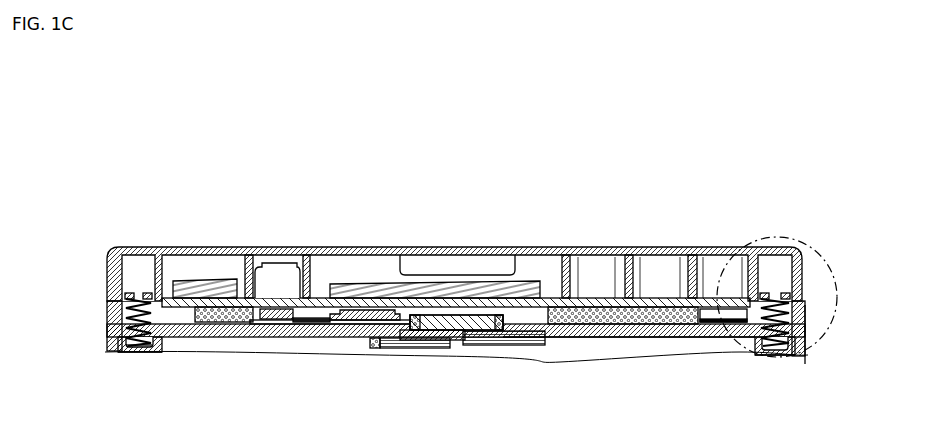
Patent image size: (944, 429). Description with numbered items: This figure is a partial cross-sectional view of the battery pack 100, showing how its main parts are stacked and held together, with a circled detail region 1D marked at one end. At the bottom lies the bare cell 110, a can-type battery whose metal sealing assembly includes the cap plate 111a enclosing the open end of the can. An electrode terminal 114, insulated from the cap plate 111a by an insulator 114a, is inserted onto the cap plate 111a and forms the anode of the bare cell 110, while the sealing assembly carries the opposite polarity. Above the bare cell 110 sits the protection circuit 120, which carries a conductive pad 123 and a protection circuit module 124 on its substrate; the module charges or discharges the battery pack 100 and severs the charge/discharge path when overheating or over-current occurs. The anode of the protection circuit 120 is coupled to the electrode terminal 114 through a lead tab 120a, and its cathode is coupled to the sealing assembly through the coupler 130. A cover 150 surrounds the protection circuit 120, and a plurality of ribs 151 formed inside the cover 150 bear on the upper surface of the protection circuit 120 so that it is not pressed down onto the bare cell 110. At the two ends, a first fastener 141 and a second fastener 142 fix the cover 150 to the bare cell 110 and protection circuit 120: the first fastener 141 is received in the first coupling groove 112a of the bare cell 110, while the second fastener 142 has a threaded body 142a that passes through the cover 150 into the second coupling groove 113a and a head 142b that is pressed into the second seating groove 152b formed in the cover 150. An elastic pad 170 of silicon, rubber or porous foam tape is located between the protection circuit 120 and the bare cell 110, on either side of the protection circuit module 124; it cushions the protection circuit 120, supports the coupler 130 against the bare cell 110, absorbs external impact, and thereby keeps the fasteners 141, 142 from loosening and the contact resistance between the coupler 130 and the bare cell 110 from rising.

The battery pack 100 is at (88, 139).
The bare cell 110 is at (99, 350).
The cap plate 111a is at (593, 338).
The first coupling groove 112a is at (775, 351).
The second coupling groove 113a is at (137, 350).
The electrode terminal 114 is at (458, 332).
The insulator 114a is at (407, 348).
The protection circuit 120 is at (548, 289).
The lead tab 120a is at (304, 332).
The conductive pad 123 is at (280, 270).
The protection circuit module 124 is at (207, 283).
The coupler 130 is at (710, 324).
The first fastener 141 is at (795, 294).
The second fastener 142 is at (114, 291).
The body of second fastener 142a is at (157, 335).
The head of second fastener 142b is at (107, 302).
The cover 150 is at (651, 244).
The ribs 151 is at (312, 267).
The second seating groove 152b is at (110, 322).
The elastic pad 170 is at (232, 323).
The detail region of FIG. 1D is at (834, 252).